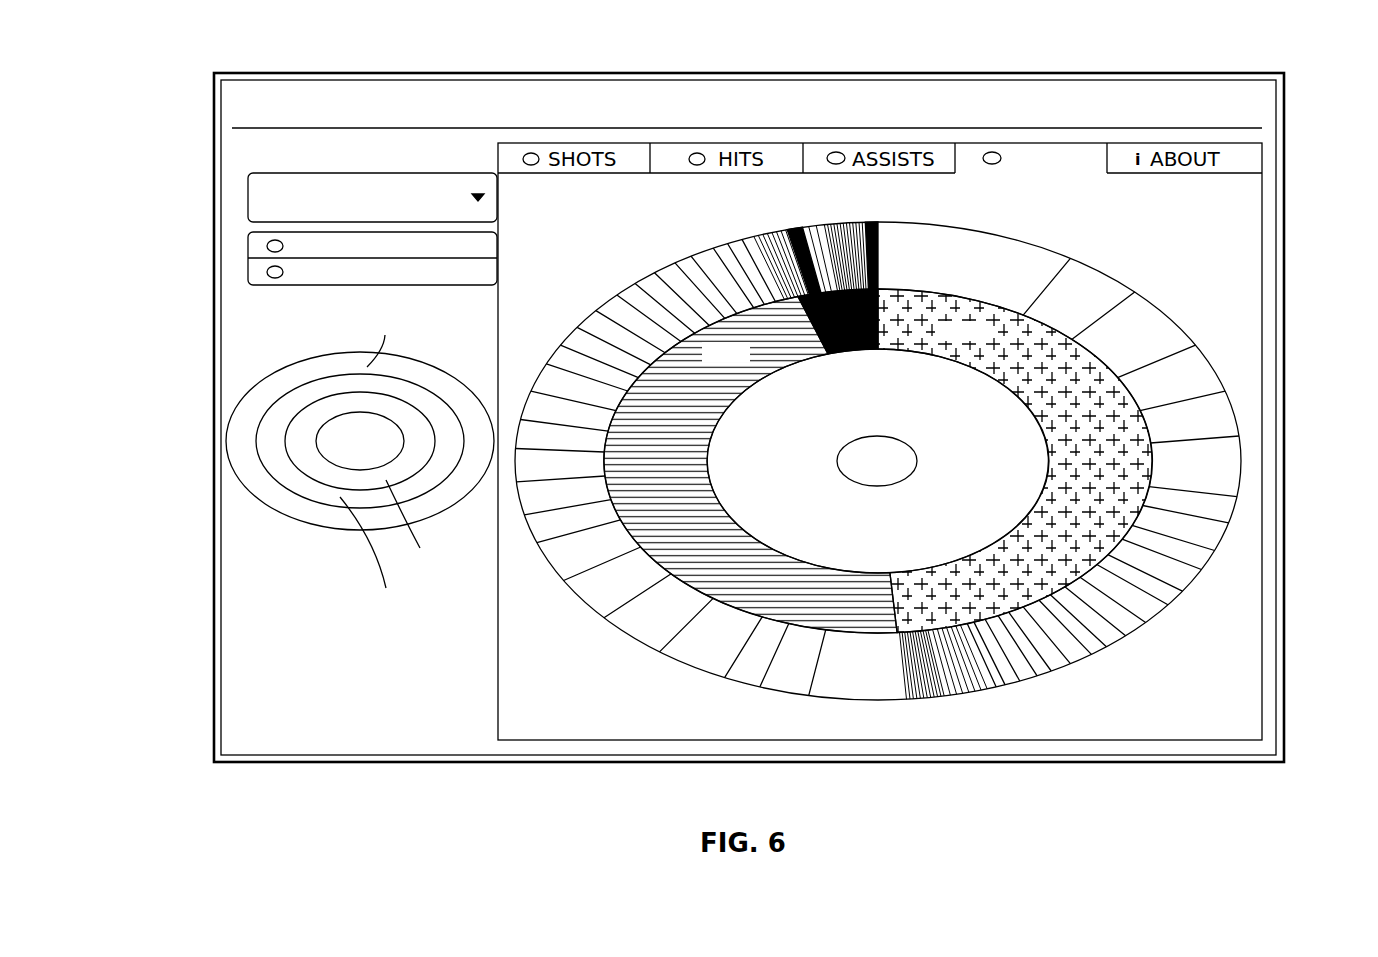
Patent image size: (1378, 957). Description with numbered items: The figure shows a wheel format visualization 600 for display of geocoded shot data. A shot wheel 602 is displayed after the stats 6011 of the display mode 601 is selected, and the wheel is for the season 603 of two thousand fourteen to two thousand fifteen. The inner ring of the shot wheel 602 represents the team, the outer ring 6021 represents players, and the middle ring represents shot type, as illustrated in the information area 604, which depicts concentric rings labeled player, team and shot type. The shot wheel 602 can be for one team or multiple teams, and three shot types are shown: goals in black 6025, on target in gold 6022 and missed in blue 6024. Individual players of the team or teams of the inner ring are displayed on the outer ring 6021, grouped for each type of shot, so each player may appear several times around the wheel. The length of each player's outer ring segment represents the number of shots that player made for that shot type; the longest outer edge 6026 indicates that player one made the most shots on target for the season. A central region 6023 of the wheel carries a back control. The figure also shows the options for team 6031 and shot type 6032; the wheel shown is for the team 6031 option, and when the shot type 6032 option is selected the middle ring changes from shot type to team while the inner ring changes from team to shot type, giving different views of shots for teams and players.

The statistics user interface 600 is at (238, 24).
The display mode 601 is at (848, 112).
The stats 6011 is at (1053, 150).
The shot wheel 602 is at (1068, 255).
The outer ring 6021 is at (1140, 290).
The on target (gold) shot type 6022 is at (1060, 377).
The center back button region 6023 is at (990, 458).
The missed (blue) shot type 6024 is at (1220, 182).
The goals (black) shot type 6025 is at (835, 290).
The longest outer edge 6026 is at (945, 235).
The season 603 is at (348, 150).
The team option 6031 is at (317, 243).
The shot type option 6032 is at (305, 272).
The information area 604 is at (257, 475).